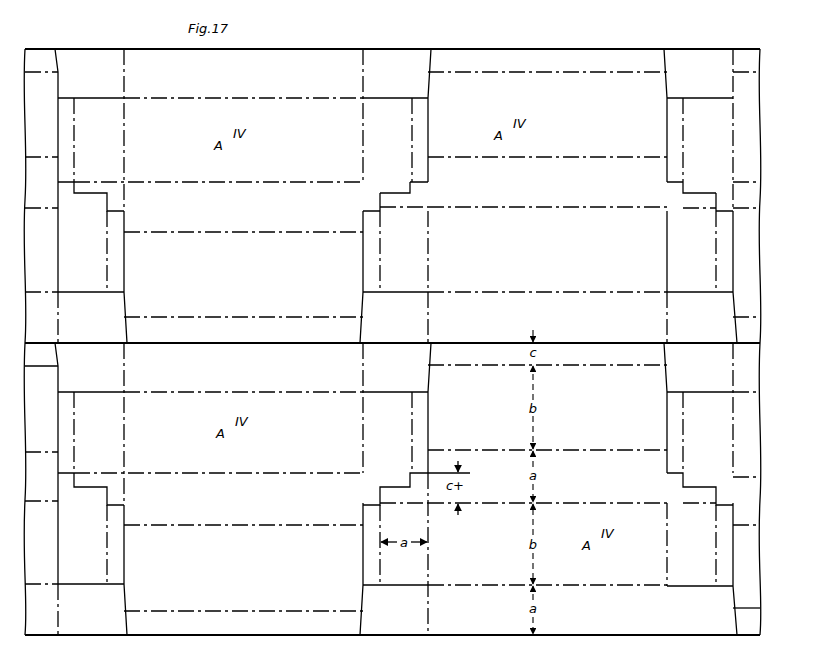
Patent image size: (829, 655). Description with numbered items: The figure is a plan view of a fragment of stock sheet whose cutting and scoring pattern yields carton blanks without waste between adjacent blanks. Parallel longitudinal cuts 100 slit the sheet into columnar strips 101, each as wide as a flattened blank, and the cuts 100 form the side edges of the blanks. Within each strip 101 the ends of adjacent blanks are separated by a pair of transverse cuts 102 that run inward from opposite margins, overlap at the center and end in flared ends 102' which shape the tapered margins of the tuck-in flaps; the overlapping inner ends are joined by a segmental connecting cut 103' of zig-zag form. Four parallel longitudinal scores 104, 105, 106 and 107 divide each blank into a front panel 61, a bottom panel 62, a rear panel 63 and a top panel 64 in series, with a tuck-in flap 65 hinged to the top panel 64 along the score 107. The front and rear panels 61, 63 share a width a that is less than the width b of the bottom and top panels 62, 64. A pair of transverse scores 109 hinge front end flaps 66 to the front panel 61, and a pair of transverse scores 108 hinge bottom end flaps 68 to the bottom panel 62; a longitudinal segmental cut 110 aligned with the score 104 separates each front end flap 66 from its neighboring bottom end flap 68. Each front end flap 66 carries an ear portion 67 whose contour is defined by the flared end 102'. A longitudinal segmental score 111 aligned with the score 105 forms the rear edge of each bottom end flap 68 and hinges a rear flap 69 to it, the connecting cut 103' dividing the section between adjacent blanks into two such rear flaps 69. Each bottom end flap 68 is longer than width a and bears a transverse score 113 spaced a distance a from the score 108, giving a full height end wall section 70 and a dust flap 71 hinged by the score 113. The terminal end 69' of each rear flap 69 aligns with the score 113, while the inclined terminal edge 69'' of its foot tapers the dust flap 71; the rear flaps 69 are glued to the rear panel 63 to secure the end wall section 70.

The longitudinal cut 100 is at (104, 48).
The columnar strip 101 is at (24, 195).
The transverse cut 102 is at (554, 342).
The flared end of transverse cut 102' is at (554, 327).
The Z-shaped segmental connecting cut 103' is at (548, 316).
The rear flap 69 is at (547, 175).
The terminal end of rear flap 69' is at (598, 191).
The terminal edge of rear flap foot portion 69'' is at (530, 192).
The longitudinal segmental cut 110 is at (387, 98).
The longitudinal segmental score 111 is at (413, 206).
The transverse score 108 is at (432, 225).
The end wall section 70 is at (408, 242).
The bottom end flap 68 is at (372, 247).
The dust flap 71 is at (370, 258).
The transverse score 113 is at (382, 276).
The transverse score 109 is at (430, 327).
The front end flap 66 is at (546, 317).
The ear portion 67 is at (366, 343).
The tuck-in flap 65 is at (547, 59).
The top panel 64 is at (548, 112).
The rear panel 63 is at (552, 181).
The bottom panel 62 is at (552, 242).
The front panel 61 is at (553, 314).
The longitudinal score 107 is at (624, 71).
The longitudinal score 106 is at (618, 154).
The longitudinal score 105 is at (615, 204).
The longitudinal score 104 is at (617, 287).